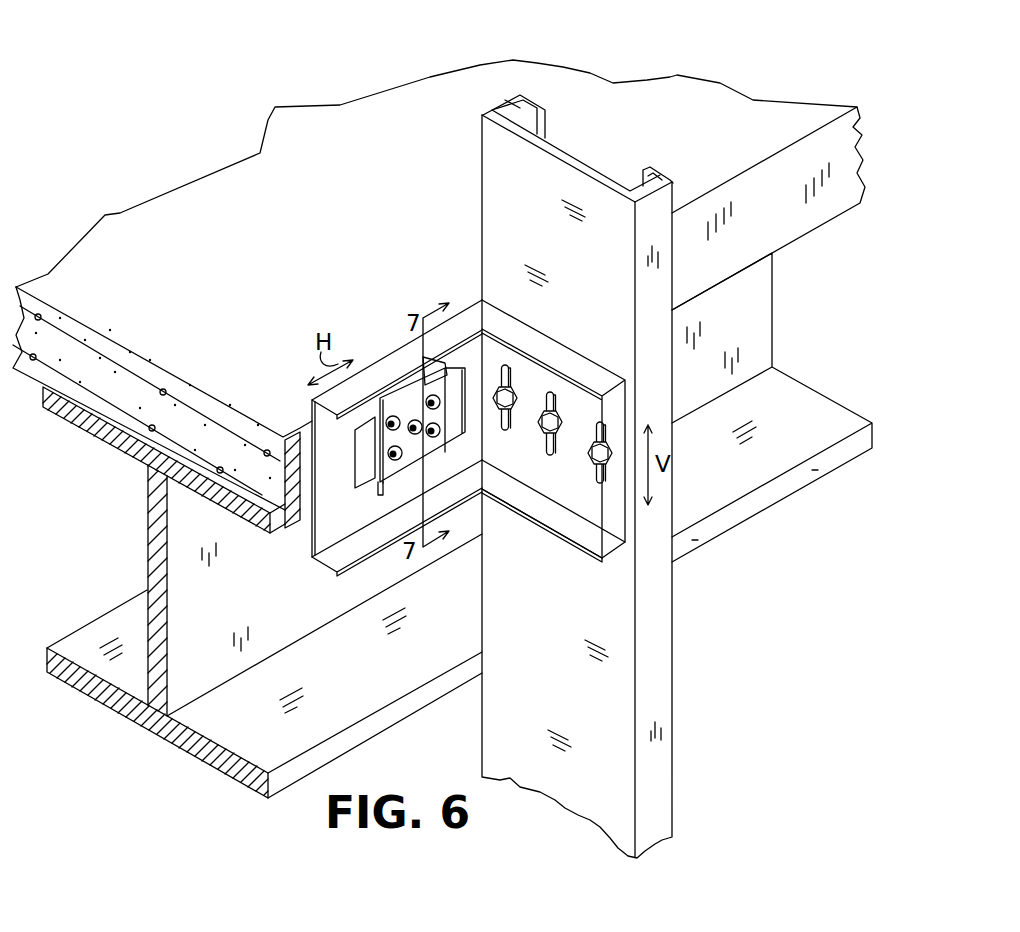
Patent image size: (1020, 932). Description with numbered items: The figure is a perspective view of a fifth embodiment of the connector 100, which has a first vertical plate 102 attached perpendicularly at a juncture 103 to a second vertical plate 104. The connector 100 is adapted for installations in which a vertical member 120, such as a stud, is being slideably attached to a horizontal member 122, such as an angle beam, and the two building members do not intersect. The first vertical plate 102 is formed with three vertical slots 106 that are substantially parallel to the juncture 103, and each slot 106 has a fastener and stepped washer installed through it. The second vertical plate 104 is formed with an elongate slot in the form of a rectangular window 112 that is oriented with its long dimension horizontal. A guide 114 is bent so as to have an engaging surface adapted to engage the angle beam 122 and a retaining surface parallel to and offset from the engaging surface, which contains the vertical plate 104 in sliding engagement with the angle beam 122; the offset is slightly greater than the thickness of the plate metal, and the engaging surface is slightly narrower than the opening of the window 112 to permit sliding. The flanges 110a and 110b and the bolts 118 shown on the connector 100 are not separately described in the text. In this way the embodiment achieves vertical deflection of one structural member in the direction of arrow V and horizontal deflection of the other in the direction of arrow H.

The connector 100 is at (437, 454).
The first vertical plate 102 is at (590, 517).
The juncture 103 is at (485, 447).
The second vertical plate 104 is at (332, 540).
The vertical slots 106 is at (549, 455).
The lower flange of second leg 110a is at (553, 523).
The lower flange of first leg 110b is at (337, 558).
The rectangular window 112 is at (364, 464).
The guide 114 is at (396, 489).
The bolts 118 is at (403, 413).
The vertical member 120 is at (507, 720).
The horizontal member 122 is at (790, 228).